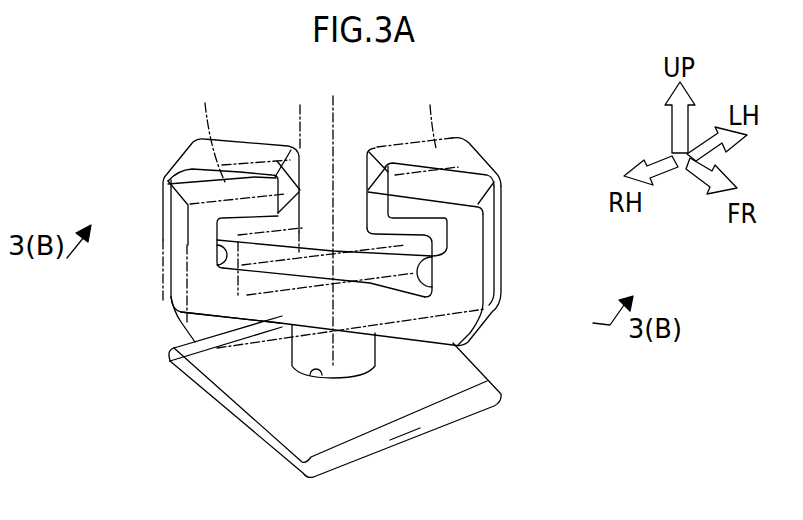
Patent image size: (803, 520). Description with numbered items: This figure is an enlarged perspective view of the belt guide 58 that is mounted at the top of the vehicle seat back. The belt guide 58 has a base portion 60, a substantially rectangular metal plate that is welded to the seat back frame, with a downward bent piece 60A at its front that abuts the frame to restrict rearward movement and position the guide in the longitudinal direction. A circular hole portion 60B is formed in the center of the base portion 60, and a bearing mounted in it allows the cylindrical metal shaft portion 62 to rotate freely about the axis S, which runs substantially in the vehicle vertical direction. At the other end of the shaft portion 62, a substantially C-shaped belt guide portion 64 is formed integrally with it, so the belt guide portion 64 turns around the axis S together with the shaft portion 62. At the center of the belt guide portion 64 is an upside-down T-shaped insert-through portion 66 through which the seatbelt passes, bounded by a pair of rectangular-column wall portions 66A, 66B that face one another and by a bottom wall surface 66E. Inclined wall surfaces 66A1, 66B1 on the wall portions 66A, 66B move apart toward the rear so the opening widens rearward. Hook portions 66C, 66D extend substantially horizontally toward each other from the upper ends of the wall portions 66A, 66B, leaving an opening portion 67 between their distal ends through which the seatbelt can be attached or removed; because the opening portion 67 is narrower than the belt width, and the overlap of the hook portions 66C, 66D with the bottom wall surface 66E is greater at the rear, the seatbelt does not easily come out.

The belt guide 58 is at (548, 227).
The base portion 60 is at (269, 444).
The bent piece 60A is at (390, 440).
The hole portion 60B is at (320, 378).
The shaft portion 62 is at (376, 355).
The belt guide portion 64 is at (492, 151).
The insert-through portion 66 is at (280, 263).
The wall portion 66A is at (163, 233).
The wall surface 66A1 is at (240, 263).
The wall portion 66B is at (468, 276).
The wall surface 66B1 is at (440, 283).
The hook portion 66C is at (237, 152).
The hook portion 66D is at (461, 185).
The bottom wall surface 66E is at (305, 266).
The opening portion 67 is at (303, 208).
The axis S is at (340, 108).